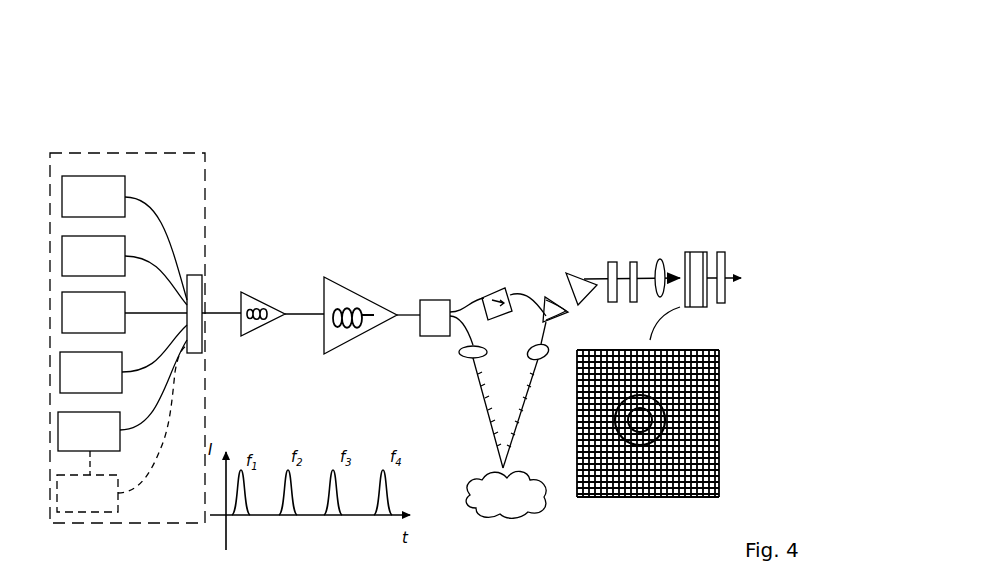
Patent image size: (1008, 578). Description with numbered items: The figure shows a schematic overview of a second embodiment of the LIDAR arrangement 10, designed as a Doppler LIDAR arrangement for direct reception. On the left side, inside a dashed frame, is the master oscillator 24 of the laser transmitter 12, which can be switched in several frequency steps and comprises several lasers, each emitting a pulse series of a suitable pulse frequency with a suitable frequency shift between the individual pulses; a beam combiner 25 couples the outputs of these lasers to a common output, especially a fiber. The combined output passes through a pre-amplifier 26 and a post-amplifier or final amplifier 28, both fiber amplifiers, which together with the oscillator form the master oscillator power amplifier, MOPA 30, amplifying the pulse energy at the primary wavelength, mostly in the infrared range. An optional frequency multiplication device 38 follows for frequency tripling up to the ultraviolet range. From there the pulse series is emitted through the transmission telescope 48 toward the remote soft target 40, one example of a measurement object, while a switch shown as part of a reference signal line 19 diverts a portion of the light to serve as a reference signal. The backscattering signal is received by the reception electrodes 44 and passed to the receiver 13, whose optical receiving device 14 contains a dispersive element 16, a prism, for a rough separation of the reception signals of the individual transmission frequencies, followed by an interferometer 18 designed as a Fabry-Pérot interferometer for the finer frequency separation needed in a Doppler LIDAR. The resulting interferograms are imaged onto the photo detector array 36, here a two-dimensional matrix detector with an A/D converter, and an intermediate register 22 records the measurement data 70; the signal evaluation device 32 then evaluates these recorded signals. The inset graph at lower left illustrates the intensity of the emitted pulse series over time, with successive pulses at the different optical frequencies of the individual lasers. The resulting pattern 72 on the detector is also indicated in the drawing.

The LIDAR arrangement 10 is at (458, 156).
The laser transmitter 12 is at (331, 209).
The receiver 13 is at (625, 149).
The optical receiving device 14 is at (580, 229).
The dispersive optical element 16 is at (577, 283).
The interferometer 18 is at (634, 250).
The reference signal line 19 is at (492, 290).
The intermediate register 22 is at (727, 260).
The master oscillator 24 is at (207, 203).
The beam combiner 25 is at (195, 292).
The pre-amplifier 26 is at (265, 307).
The final amplifier 28 is at (353, 340).
The MOPA 30 is at (321, 251).
The signal evaluation device 32 is at (726, 94).
The photo detector array 36 is at (707, 234).
The frequency multiplication device 38 is at (433, 300).
The soft target 40 is at (513, 488).
The reception electrodes 44 is at (541, 350).
The transmission telescope 48 is at (468, 356).
The measurement data 70 is at (718, 366).
The pixels 72 is at (717, 402).